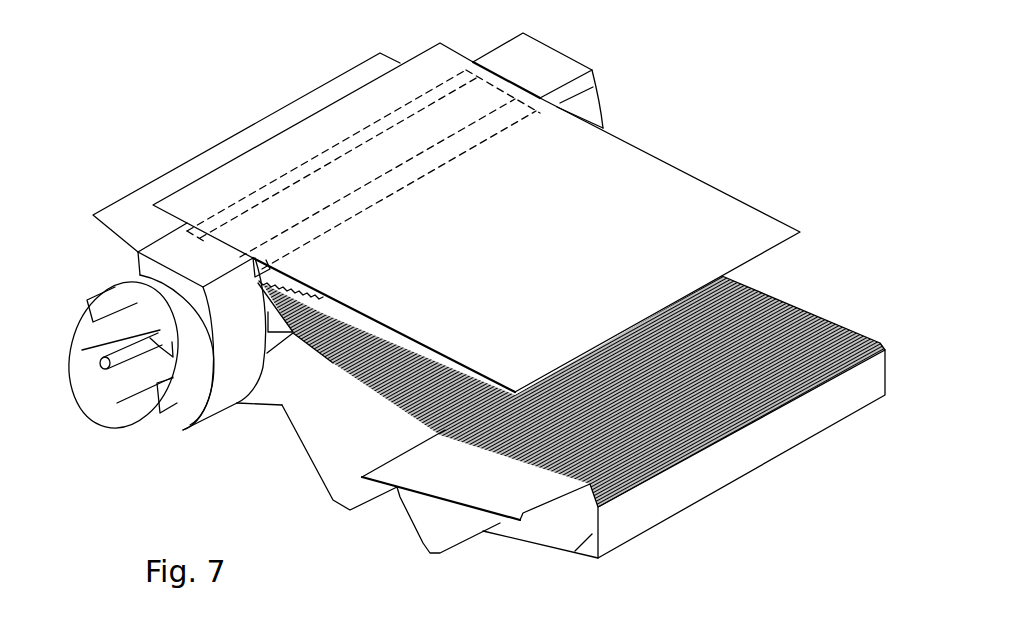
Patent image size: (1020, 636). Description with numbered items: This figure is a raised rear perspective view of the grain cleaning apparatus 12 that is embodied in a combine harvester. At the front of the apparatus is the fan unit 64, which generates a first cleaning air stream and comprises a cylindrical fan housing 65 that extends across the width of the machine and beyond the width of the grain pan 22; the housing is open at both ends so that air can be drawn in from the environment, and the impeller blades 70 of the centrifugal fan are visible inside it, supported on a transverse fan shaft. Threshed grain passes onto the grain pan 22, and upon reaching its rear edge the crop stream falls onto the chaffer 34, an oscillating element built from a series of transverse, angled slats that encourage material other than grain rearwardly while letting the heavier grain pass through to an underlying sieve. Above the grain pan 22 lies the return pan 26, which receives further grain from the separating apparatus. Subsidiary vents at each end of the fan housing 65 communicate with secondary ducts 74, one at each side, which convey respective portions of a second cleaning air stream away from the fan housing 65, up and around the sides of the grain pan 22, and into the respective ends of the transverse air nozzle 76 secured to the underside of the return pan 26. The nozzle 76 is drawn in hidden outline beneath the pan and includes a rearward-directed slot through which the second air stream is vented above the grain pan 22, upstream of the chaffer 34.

The grain cleaning apparatus 12 is at (832, 88).
The grain pan 22 is at (195, 158).
The return pan 26 is at (747, 203).
The chaffer 34 is at (790, 298).
The fan unit 64 is at (60, 414).
The fan housing 65 is at (121, 419).
The impeller blades 70 is at (83, 350).
The secondary ducts 74 is at (595, 105).
The transverse air nozzle 76 is at (460, 95).